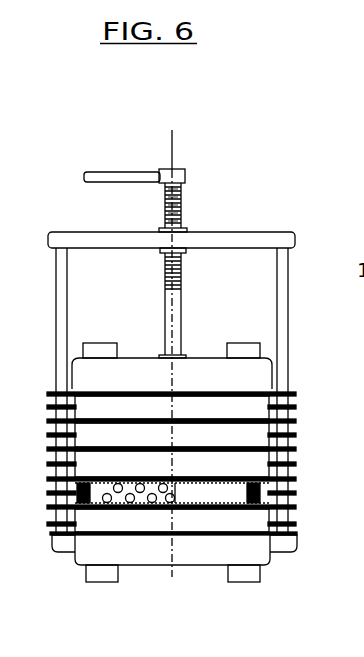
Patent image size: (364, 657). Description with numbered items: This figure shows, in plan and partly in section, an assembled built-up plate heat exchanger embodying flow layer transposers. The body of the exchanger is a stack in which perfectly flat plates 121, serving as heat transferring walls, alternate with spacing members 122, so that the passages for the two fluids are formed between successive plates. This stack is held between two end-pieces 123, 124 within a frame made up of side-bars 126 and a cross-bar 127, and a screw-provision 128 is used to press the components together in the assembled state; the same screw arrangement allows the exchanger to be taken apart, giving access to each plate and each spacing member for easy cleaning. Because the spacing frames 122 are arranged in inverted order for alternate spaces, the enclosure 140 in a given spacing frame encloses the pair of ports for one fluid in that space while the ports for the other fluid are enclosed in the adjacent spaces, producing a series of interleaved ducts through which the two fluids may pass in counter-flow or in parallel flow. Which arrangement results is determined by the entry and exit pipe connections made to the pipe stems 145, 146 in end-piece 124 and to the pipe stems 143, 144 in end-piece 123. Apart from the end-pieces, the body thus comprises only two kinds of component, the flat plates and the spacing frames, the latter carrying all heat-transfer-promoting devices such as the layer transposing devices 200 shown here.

The screw-provision 128 is at (182, 202).
The cross-bar 127 is at (227, 238).
The side-bars 126 is at (283, 308).
The pipe stem 143 is at (101, 348).
The pipe stem 144 is at (240, 348).
The end-piece 123 is at (253, 380).
The flat plates 121 is at (297, 394).
The spacing members 122 is at (245, 431).
The enclosure 140 is at (294, 485).
The layer transposing devices 200 is at (73, 503).
The end-piece 124 is at (248, 556).
The pipe stem 145 is at (108, 576).
The pipe stem 146 is at (245, 577).